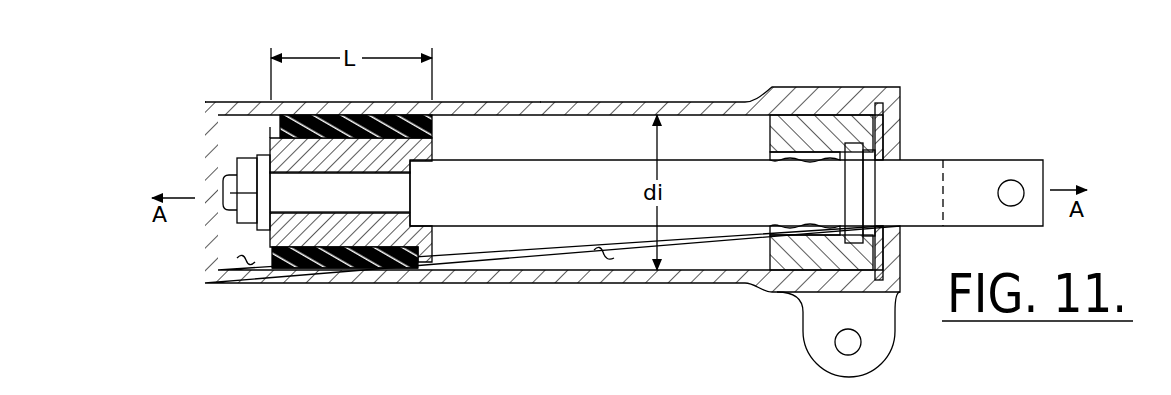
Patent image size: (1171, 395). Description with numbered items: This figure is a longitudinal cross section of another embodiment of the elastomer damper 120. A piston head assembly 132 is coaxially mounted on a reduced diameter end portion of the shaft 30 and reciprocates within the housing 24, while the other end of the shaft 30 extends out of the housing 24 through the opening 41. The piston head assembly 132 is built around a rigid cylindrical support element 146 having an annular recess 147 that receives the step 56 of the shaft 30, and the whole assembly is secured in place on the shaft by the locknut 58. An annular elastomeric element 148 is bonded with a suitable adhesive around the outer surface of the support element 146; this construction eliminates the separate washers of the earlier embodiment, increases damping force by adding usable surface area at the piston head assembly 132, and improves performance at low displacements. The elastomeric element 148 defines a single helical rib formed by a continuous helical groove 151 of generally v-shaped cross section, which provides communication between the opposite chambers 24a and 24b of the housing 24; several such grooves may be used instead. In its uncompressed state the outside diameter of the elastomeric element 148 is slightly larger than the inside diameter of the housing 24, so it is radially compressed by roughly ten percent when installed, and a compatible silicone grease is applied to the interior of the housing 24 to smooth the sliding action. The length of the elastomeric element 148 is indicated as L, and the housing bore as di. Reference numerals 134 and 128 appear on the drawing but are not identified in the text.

The elastomer damper 120 is at (208, 77).
The housing 24 is at (702, 110).
The chamber 24a is at (237, 272).
The chamber 24b is at (608, 260).
The cylinder wall 134 is at (540, 110).
The piston head assembly 132 is at (436, 118).
The shaft 30 is at (553, 165).
The opening 41 is at (892, 127).
The piston 128 is at (413, 191).
The annular recess 147 is at (423, 163).
The rigid cylindrical support element 146 is at (420, 235).
The annular elastomeric element 148 is at (423, 268).
The continuous helical groove 151 is at (330, 262).
The step 56 is at (410, 190).
The locknut 58 is at (245, 210).